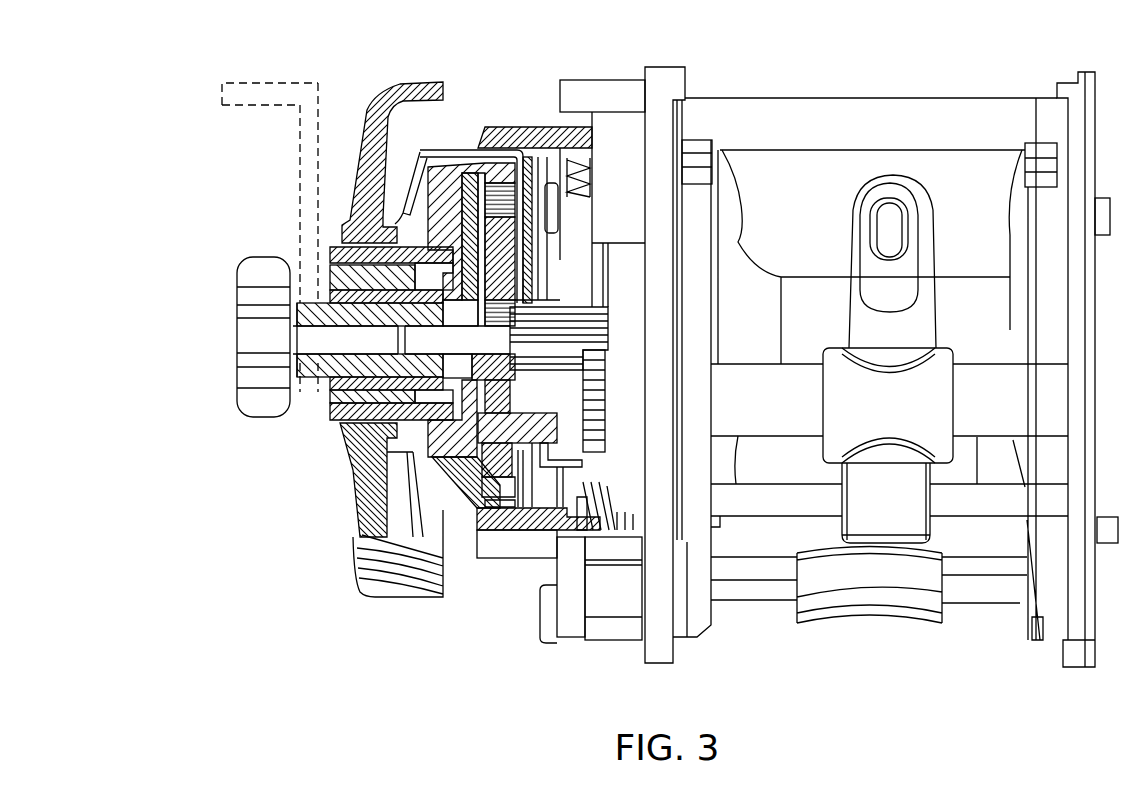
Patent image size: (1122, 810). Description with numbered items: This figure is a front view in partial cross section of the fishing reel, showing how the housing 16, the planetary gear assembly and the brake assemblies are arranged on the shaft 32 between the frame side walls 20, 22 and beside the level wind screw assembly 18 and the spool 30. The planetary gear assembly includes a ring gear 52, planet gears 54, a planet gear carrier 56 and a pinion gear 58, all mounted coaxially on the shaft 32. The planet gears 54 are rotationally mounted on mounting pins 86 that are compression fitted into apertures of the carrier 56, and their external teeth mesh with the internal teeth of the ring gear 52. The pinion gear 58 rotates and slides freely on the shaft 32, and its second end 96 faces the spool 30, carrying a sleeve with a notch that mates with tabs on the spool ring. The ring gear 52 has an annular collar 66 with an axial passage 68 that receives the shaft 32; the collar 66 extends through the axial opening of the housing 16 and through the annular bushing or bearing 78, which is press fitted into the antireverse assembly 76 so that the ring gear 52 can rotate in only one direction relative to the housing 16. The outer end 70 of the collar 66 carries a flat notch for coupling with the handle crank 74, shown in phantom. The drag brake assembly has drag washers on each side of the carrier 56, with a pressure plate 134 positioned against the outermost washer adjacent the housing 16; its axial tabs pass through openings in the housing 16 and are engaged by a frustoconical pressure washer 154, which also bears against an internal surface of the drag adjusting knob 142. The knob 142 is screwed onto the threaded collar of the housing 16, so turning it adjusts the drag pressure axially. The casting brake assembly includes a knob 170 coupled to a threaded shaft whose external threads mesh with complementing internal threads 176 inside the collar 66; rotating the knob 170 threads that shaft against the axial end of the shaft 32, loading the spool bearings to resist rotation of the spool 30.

The housing 16 is at (511, 538).
The level wind screw assembly 18 is at (902, 177).
The side wall 20 is at (1089, 72).
The side wall 22 is at (662, 66).
The spool 30 is at (790, 277).
The shaft 32 is at (440, 342).
The ring gear 52 is at (445, 493).
The planet gears 54 is at (510, 225).
The planet gear carrier 56 is at (518, 218).
The pinion gear 58 is at (552, 300).
The annular collar 66 is at (307, 373).
The axial passage 68 is at (303, 347).
The outer end 70 is at (293, 388).
The handle crank 74 is at (316, 72).
The antireverse assembly 76 is at (330, 267).
The annular bushing or bearing 78 is at (330, 290).
The mounting pins 86 is at (510, 425).
The second end 96 is at (602, 345).
The pressure plate 134 is at (452, 140).
The drag adjusting knob 142 is at (410, 80).
The pressure washer 154 is at (410, 181).
The knob 170 is at (237, 293).
The internal threads 176 is at (297, 310).